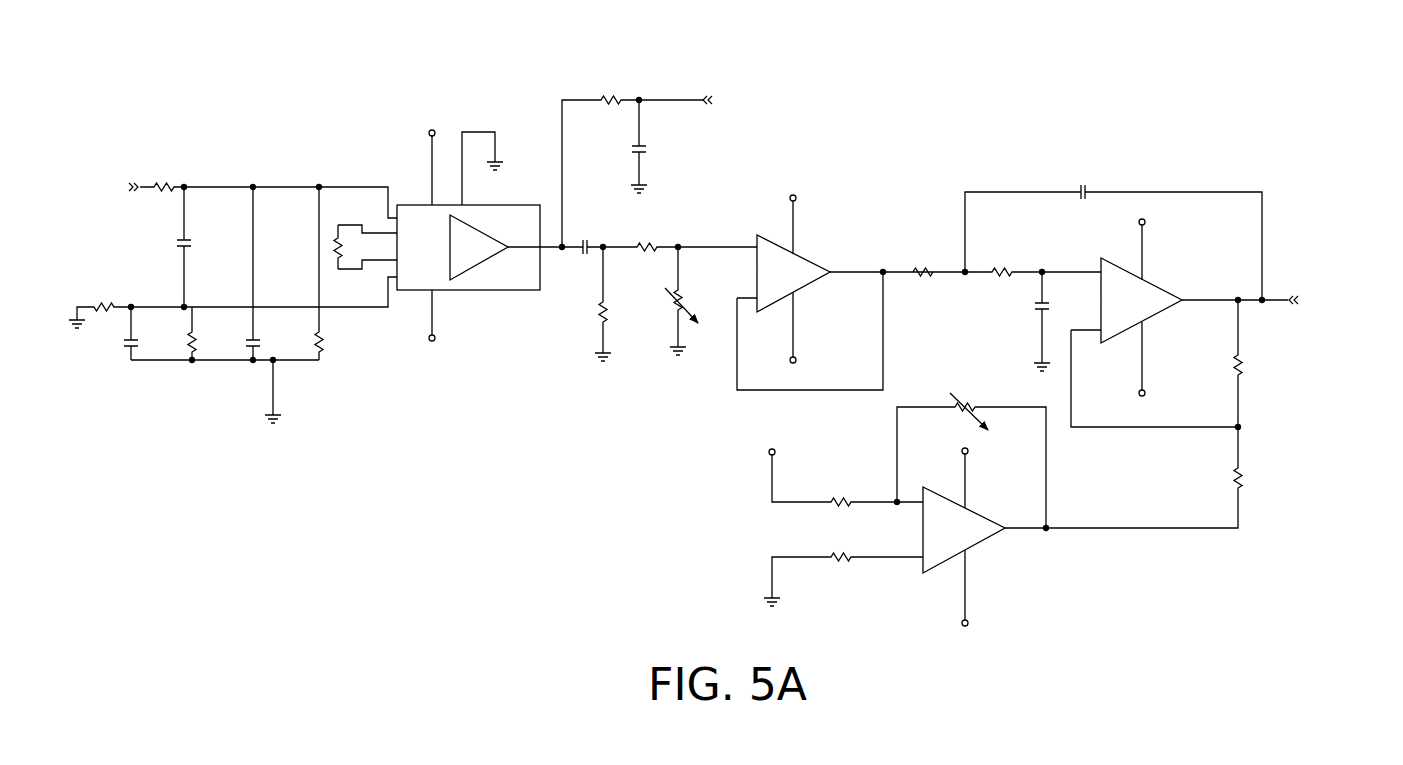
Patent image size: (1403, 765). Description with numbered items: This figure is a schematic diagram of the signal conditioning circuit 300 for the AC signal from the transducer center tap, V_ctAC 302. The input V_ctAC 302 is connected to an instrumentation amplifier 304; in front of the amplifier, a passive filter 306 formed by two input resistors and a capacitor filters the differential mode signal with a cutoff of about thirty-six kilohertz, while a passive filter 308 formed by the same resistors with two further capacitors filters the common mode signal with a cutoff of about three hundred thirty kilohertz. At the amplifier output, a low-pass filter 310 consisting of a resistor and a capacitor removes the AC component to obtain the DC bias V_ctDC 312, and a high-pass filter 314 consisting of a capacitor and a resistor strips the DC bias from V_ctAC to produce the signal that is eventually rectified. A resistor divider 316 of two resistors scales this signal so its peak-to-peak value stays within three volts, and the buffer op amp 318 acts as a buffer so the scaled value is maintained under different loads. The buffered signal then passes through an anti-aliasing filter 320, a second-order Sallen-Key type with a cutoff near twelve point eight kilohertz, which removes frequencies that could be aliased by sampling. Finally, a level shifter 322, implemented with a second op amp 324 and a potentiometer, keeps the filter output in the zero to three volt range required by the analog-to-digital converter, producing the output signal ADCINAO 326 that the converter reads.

The signal conditioning circuit 300 is at (1089, 96).
The V_ctAC 302 is at (80, 163).
The instrumentation amplifier 304 is at (504, 324).
The passive filter 306 is at (158, 240).
The passive filter 308 is at (214, 374).
The low-pass filter 310 is at (603, 126).
The V_ctDC 312 is at (747, 86).
The high-pass filter 314 is at (577, 274).
The resistor divider 316 is at (663, 304).
The Op Amp U9B 318 is at (842, 242).
The anti-aliasing filter 320 is at (1242, 235).
The level shifter 322 is at (1062, 455).
The Op Amp U9C 324 is at (1032, 567).
The output signal ADCINAO 326 is at (1347, 320).